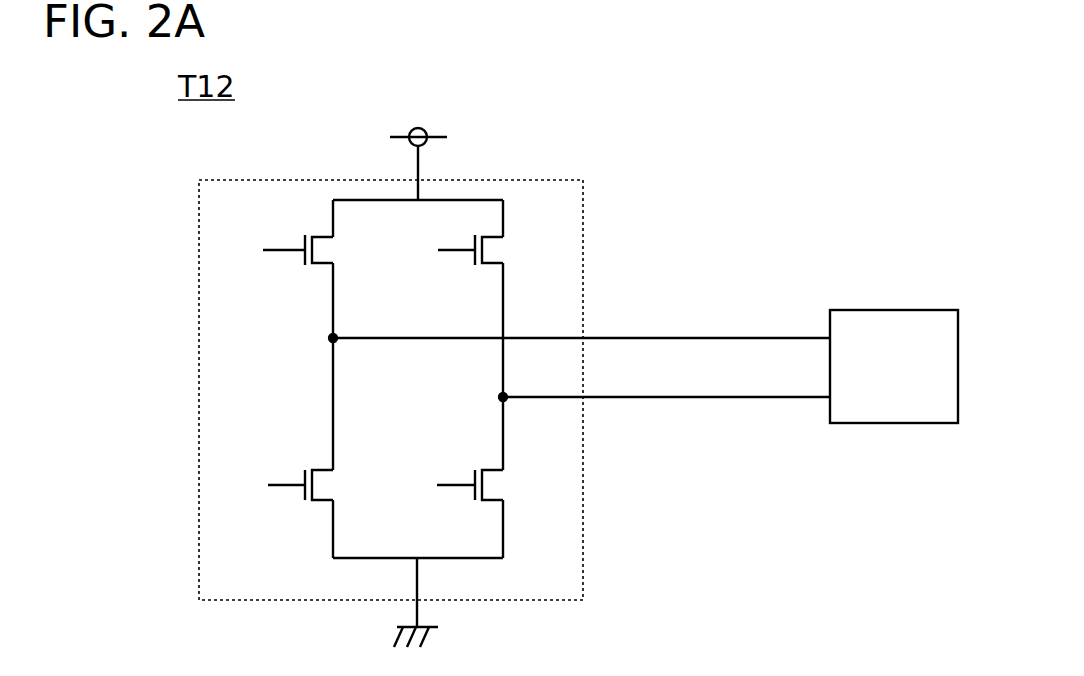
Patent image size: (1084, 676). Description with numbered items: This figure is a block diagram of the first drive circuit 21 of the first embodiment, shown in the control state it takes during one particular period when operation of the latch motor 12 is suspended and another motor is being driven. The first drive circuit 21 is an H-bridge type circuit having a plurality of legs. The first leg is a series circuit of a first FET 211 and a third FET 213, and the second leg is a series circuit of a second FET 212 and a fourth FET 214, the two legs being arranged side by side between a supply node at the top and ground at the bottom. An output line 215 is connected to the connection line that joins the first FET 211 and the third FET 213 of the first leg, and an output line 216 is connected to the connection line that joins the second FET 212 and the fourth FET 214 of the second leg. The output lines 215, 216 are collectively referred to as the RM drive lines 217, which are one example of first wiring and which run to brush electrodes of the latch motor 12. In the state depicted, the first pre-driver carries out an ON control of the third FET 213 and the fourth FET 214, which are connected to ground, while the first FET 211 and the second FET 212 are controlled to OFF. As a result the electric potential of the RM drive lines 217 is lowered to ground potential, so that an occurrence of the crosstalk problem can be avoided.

The first drive circuit 21 is at (583, 208).
The first FET 211 is at (345, 260).
The second FET 212 is at (513, 247).
The third FET 213 is at (345, 468).
The fourth FET 214 is at (515, 490).
The output line 215 is at (672, 338).
The output line 216 is at (755, 397).
The RM drive lines 217 is at (580, 311).
The latch motor 12 is at (893, 423).